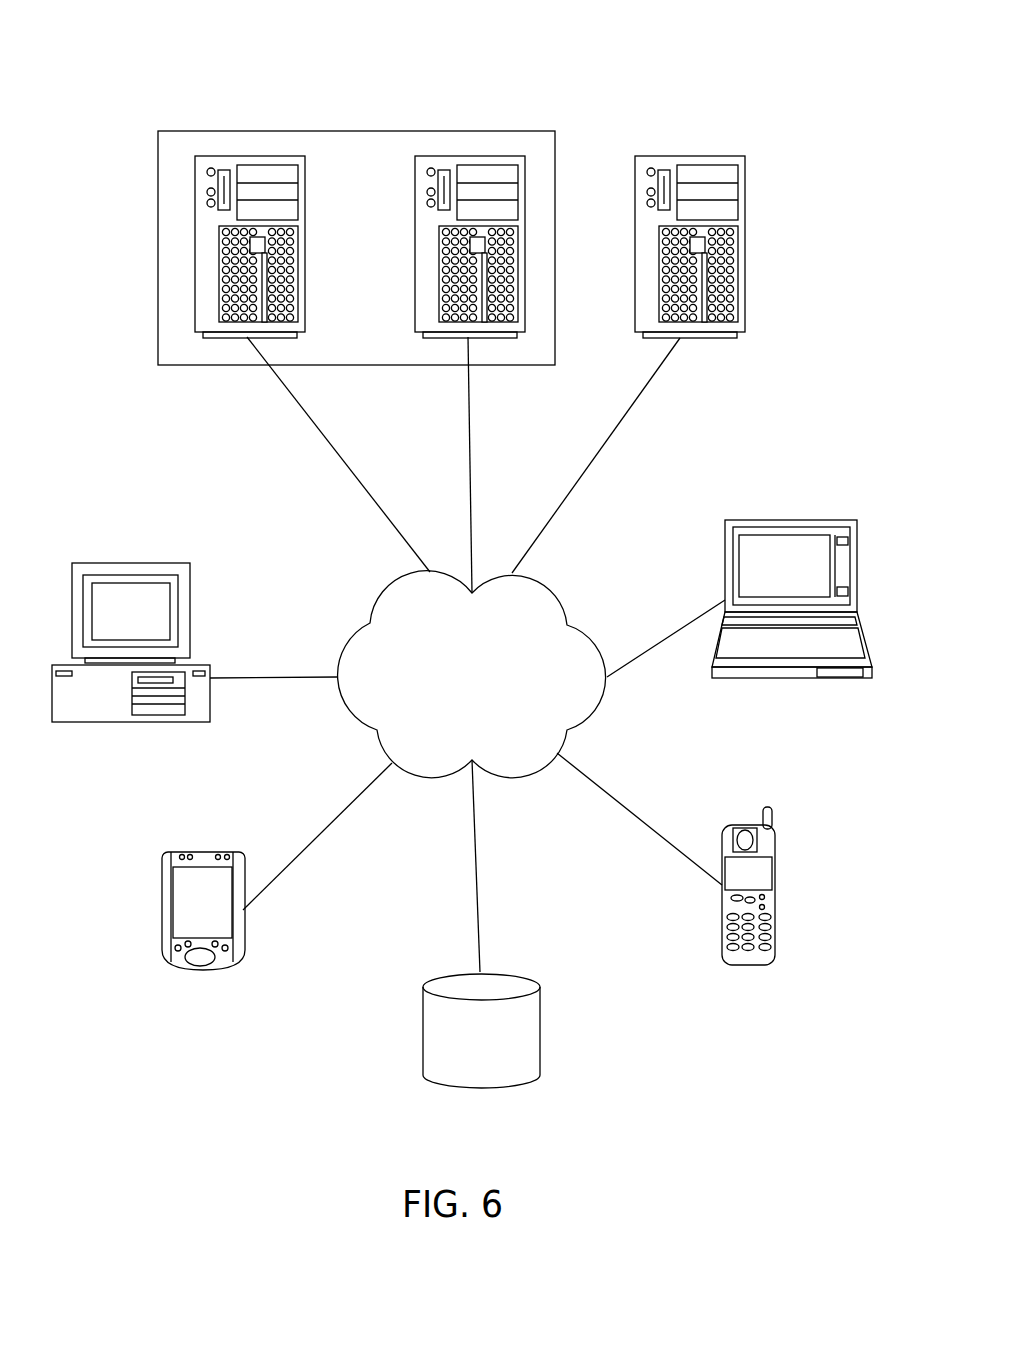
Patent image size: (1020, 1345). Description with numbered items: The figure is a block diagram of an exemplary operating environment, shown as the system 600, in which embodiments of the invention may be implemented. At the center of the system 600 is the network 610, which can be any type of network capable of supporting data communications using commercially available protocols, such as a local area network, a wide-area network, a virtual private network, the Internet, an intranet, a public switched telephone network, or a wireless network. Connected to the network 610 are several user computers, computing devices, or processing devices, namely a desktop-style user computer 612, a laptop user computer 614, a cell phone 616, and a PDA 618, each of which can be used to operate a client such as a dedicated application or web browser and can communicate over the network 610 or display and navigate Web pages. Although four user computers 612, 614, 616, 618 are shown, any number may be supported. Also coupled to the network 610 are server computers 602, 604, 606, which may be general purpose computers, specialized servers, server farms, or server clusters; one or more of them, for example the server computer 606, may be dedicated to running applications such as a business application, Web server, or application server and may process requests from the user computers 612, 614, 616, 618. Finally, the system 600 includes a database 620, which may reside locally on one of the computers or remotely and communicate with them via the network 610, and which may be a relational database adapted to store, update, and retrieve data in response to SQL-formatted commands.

The system 600 is at (752, 103).
The server computer 602 is at (229, 156).
The server computer 604 is at (467, 156).
The server computer 606 is at (745, 245).
The network 610 is at (487, 725).
The user computer 612 is at (127, 563).
The user computer 614 is at (787, 520).
The user computer 616 is at (747, 965).
The user computer 618 is at (200, 972).
The database 620 is at (500, 1078).